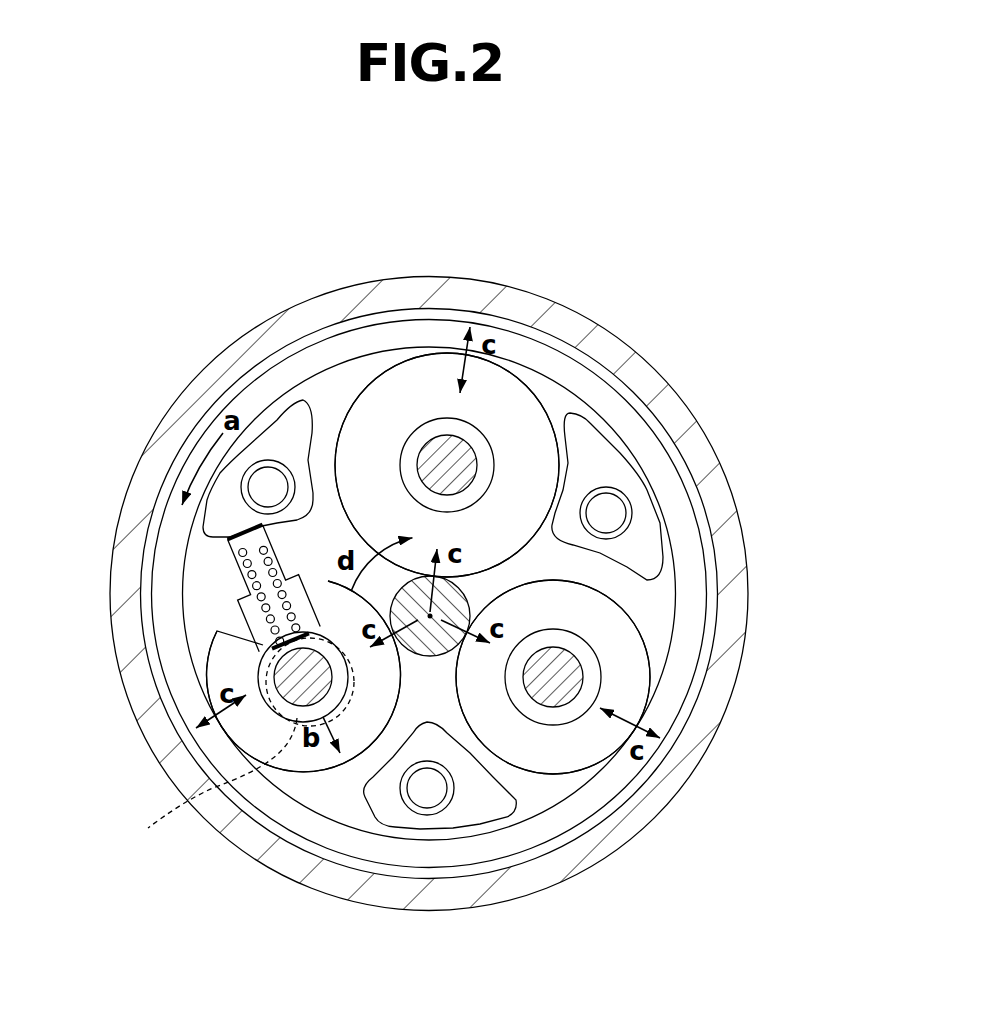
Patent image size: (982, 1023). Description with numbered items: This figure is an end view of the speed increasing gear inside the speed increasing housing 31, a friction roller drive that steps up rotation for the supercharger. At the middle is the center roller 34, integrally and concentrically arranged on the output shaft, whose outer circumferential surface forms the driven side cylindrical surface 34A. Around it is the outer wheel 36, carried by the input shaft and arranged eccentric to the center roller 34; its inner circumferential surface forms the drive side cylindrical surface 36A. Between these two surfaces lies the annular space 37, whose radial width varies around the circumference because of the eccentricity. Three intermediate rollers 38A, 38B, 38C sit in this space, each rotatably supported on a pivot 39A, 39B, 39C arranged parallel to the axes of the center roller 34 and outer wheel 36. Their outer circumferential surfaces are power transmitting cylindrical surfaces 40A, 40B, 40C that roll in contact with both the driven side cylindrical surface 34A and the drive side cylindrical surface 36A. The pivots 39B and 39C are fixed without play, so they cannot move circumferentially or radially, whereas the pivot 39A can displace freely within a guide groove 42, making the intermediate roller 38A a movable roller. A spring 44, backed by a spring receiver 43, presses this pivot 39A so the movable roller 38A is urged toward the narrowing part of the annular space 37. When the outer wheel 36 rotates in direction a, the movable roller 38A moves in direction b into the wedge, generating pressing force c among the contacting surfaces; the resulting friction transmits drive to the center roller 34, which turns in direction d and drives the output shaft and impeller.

The speed increasing housing 31 is at (690, 399).
The center roller 34 is at (430, 620).
The driven side cylindrical surface 34A is at (468, 582).
The outer wheel 36 is at (405, 853).
The drive side cylindrical surface 36A is at (293, 797).
The annular space 37 is at (322, 368).
The intermediate roller (movable roller) 38A is at (252, 726).
The intermediate roller 38B is at (397, 395).
The intermediate roller 38C is at (623, 657).
The pivot 39A is at (300, 667).
The pivot 39B is at (441, 460).
The pivot 39C is at (558, 678).
The power transmitting cylindrical surface 40A is at (336, 798).
The power transmitting cylindrical surface 40B is at (330, 517).
The power transmitting cylindrical surface 40C is at (633, 612).
The guide groove 42 is at (228, 746).
The spring receiver 43 is at (228, 548).
The spring 44 is at (243, 572).